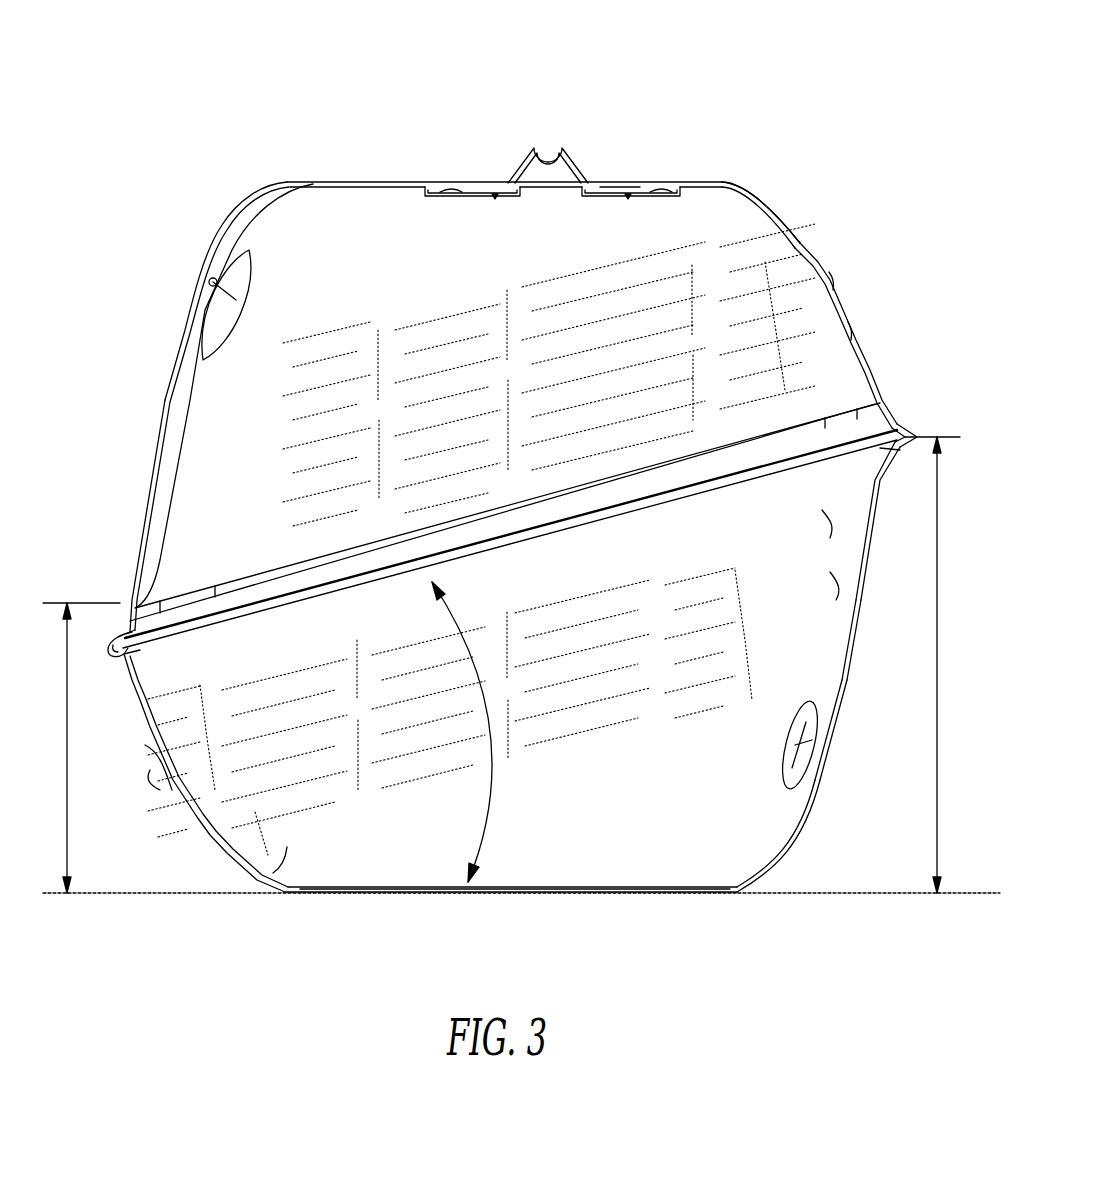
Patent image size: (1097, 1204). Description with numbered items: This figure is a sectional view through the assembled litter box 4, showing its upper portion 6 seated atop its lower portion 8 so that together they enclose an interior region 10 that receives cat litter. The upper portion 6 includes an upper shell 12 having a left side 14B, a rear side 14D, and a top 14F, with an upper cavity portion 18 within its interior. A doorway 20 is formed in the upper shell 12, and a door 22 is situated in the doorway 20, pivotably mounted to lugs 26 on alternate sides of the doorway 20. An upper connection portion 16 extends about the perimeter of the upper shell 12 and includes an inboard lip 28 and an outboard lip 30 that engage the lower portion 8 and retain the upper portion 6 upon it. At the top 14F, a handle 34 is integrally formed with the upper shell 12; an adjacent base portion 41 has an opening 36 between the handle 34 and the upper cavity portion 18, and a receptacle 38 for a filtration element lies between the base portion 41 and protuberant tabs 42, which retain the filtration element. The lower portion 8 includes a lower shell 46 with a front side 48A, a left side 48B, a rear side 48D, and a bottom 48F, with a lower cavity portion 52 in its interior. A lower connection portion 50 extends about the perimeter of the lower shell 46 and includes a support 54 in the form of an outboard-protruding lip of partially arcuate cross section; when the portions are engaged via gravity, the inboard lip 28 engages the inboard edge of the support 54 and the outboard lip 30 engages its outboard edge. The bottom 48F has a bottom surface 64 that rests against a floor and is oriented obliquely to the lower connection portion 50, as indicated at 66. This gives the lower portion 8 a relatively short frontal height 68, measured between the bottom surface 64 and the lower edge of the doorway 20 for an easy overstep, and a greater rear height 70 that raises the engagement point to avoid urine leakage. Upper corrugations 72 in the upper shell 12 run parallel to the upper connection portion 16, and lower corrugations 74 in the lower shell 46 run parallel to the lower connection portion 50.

The litter box 4 is at (662, 97).
The upper portion 6 is at (731, 180).
The lower portion 8 is at (783, 887).
The interior region 10 is at (870, 522).
The upper shell 12 is at (393, 178).
The left side 14B is at (752, 250).
The rear side 14D is at (818, 266).
The top 14F is at (418, 183).
The upper connection portion 16 is at (898, 405).
The upper cavity portion 18 is at (346, 210).
The doorway 20 is at (168, 450).
The door 22 is at (150, 492).
The lugs 26 is at (224, 287).
The inboard lip 28 is at (131, 603).
The outboard lip 30 is at (109, 641).
The handle 34 is at (572, 147).
The opening 36 is at (548, 197).
The receptacle 38 is at (642, 198).
The base portion 41 is at (621, 184).
The tabs 42 is at (448, 185).
The lower shell 46 is at (814, 832).
The front side 48A is at (193, 810).
The left side 48B is at (272, 876).
The rear side 48D is at (850, 702).
The bottom 48F is at (600, 888).
The lower connection portion 50 is at (115, 678).
The lower cavity portion 52 is at (860, 592).
The support 54 is at (886, 456).
The bottom surface 64 is at (394, 892).
The oblique orientation 66 is at (464, 596).
The frontal height 68 is at (69, 752).
The rear height 70 is at (937, 648).
The upper corrugations 72 is at (846, 322).
The lower corrugations 74 is at (170, 770).